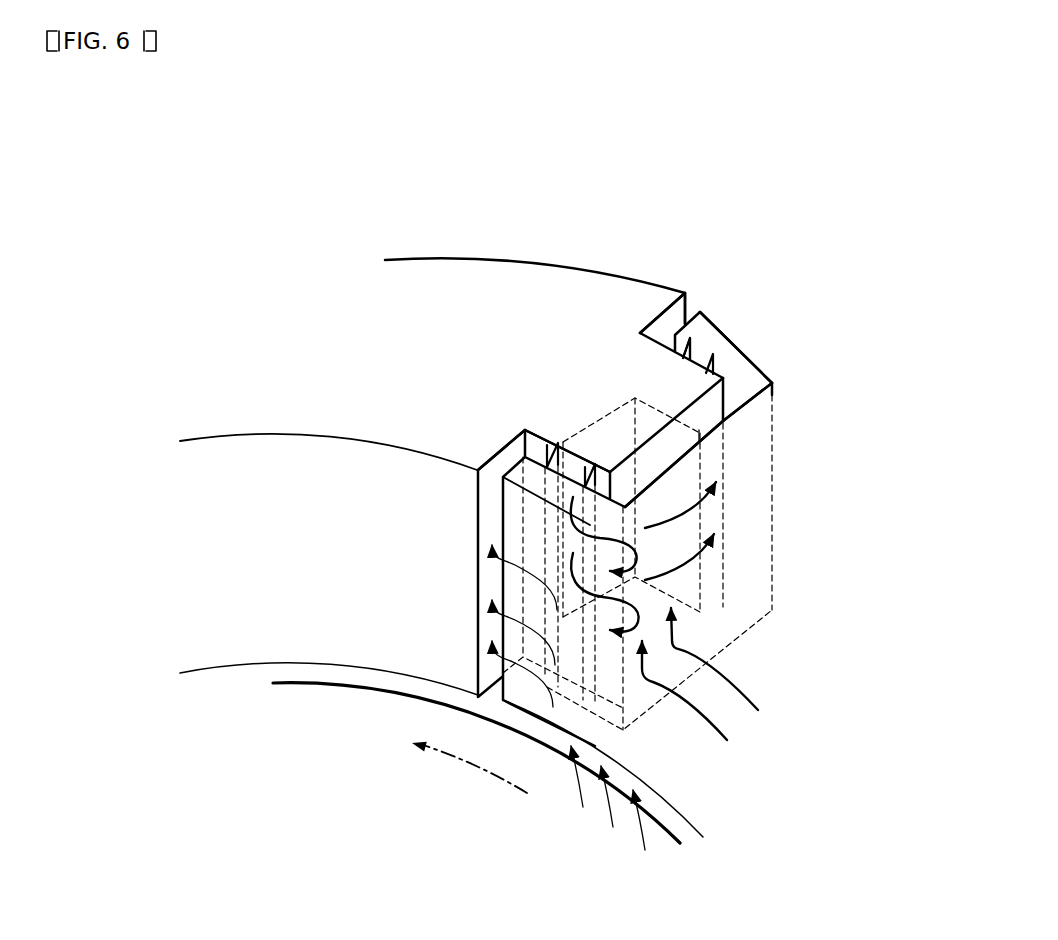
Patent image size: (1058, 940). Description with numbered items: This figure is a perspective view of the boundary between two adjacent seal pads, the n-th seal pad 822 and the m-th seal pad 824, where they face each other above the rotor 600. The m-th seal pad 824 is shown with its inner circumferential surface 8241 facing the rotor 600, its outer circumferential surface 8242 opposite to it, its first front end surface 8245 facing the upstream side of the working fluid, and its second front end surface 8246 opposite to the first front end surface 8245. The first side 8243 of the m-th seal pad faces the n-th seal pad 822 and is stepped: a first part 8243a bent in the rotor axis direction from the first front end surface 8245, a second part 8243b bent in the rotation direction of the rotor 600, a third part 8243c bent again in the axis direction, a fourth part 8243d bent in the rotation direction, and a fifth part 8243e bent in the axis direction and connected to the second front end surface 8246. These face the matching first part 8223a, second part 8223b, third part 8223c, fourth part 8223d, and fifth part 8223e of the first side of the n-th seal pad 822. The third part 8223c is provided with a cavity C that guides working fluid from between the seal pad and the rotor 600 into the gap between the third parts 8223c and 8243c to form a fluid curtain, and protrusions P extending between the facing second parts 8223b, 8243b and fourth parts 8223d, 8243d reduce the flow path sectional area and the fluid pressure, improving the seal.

The n-th seal pad 822 is at (480, 263).
The m-th seal pad 824 is at (792, 356).
The first part of first side of n-th seal pad 8223a is at (508, 450).
The second part of first side of n-th seal pad 8223b is at (528, 463).
The third part of first side of n-th seal pad 8223c is at (705, 412).
The fourth part of first side of n-th seal pad 8223d is at (721, 338).
The fifth part of first side of n-th seal pad 8223e is at (672, 300).
The first side of m-th seal pad 8243 is at (122, 788).
The first part of first side of m-th seal pad 8243a is at (502, 500).
The second part of first side of m-th seal pad 8243b is at (547, 442).
The third part of first side of m-th seal pad 8243c is at (740, 392).
The fourth part of first side of m-th seal pad 8243d is at (757, 350).
The fifth part of first side of m-th seal pad 8243e is at (686, 332).
The outer circumferential surface of m-th seal pad 8242 is at (792, 386).
The first front end surface of m-th seal pad 8245 is at (573, 720).
The second front end surface of m-th seal pad 8246 is at (746, 328).
The inner circumferential surface of m-th seal pad 8241 is at (690, 827).
The rotor 600 is at (342, 678).
The protrusion P is at (585, 462).
The cavity C is at (708, 462).